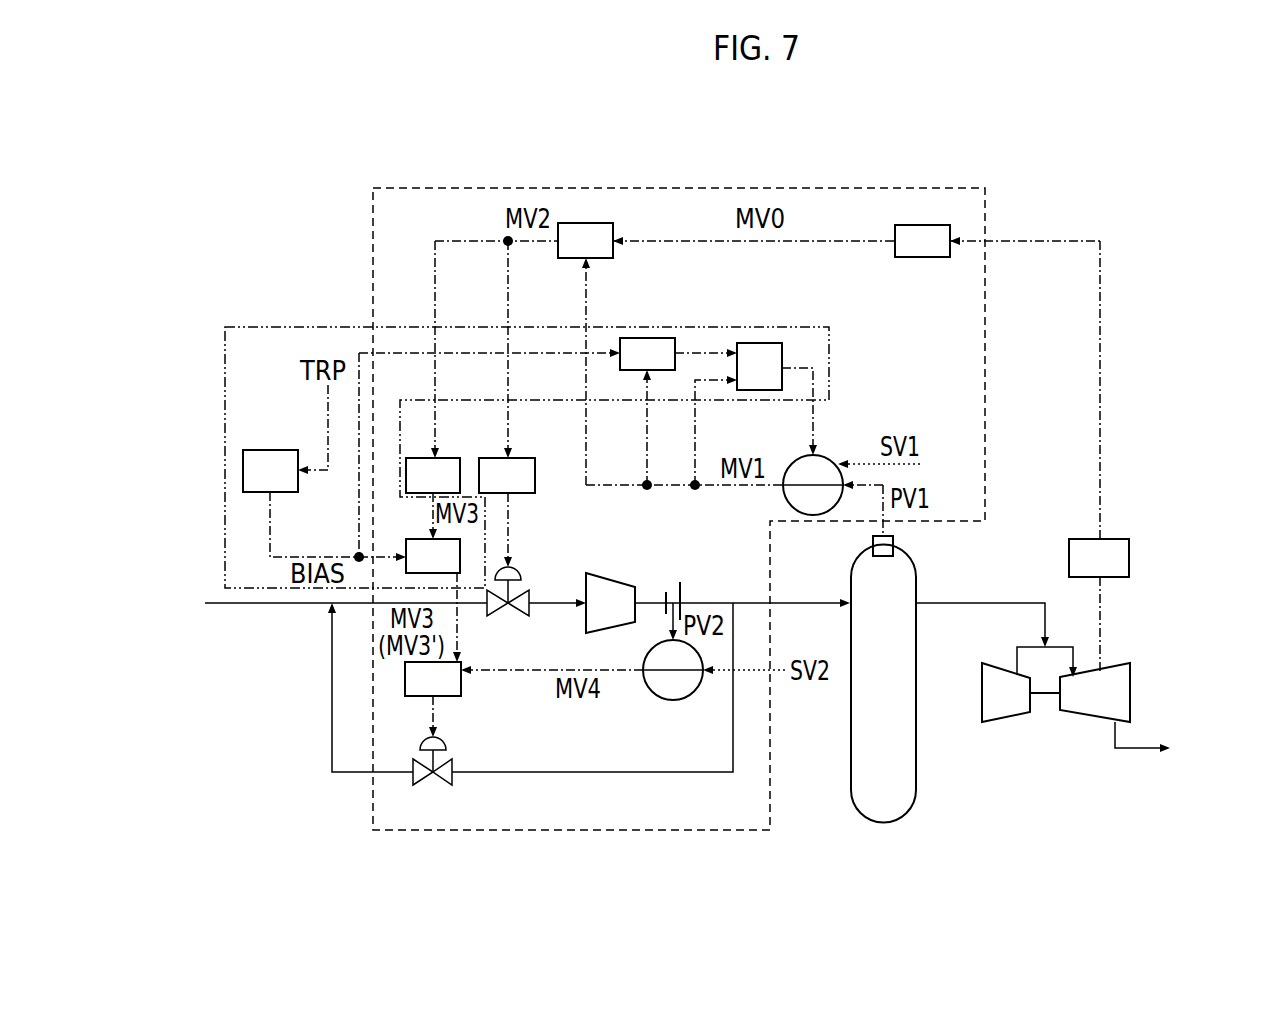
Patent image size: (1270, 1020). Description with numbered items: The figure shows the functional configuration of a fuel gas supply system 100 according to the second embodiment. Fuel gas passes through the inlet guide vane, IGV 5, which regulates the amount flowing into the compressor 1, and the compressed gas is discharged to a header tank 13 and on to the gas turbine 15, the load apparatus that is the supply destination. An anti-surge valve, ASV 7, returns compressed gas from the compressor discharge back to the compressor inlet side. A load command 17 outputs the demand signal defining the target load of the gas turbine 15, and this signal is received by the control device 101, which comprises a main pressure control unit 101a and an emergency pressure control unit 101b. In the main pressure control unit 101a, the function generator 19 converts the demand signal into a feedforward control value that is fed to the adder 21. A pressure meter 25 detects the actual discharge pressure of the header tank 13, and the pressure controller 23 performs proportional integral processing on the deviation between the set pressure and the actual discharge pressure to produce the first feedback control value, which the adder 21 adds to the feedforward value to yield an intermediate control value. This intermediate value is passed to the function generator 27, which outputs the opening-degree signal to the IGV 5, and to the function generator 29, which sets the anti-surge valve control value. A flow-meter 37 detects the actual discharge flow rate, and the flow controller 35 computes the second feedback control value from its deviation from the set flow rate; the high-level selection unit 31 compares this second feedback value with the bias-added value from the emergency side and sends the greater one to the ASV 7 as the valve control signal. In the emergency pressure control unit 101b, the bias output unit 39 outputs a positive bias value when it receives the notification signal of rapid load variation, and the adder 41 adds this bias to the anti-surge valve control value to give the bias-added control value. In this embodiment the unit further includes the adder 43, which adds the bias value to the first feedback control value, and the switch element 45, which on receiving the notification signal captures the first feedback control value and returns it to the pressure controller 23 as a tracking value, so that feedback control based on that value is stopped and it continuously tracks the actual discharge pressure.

The fuel gas supply system 100 is at (1043, 185).
The control device 101 is at (420, 130).
The main pressure control unit 101a is at (399, 188).
The emergency pressure control unit 101b is at (283, 327).
The compressor 1 is at (602, 573).
The inlet guide vane (IGV) 5 is at (529, 595).
The anti-surge valve (ASV) 7 is at (452, 765).
The header tank 13 is at (916, 770).
The gas turbine 15 is at (1082, 716).
The load command 17 is at (1129, 560).
The function generator 19 is at (922, 257).
The adder 21 is at (605, 258).
The pressure controller 23 is at (830, 460).
The pressure meter 25 is at (893, 542).
The function generator 27 is at (519, 458).
The function generator 29 is at (442, 458).
The high-level selection unit 31 is at (461, 680).
The flow controller 35 is at (678, 700).
The flow-meter 37 is at (682, 582).
The bias output unit 39 is at (270, 450).
The adder 41 is at (406, 544).
The adder 43 is at (658, 338).
The switch element 45 is at (768, 343).